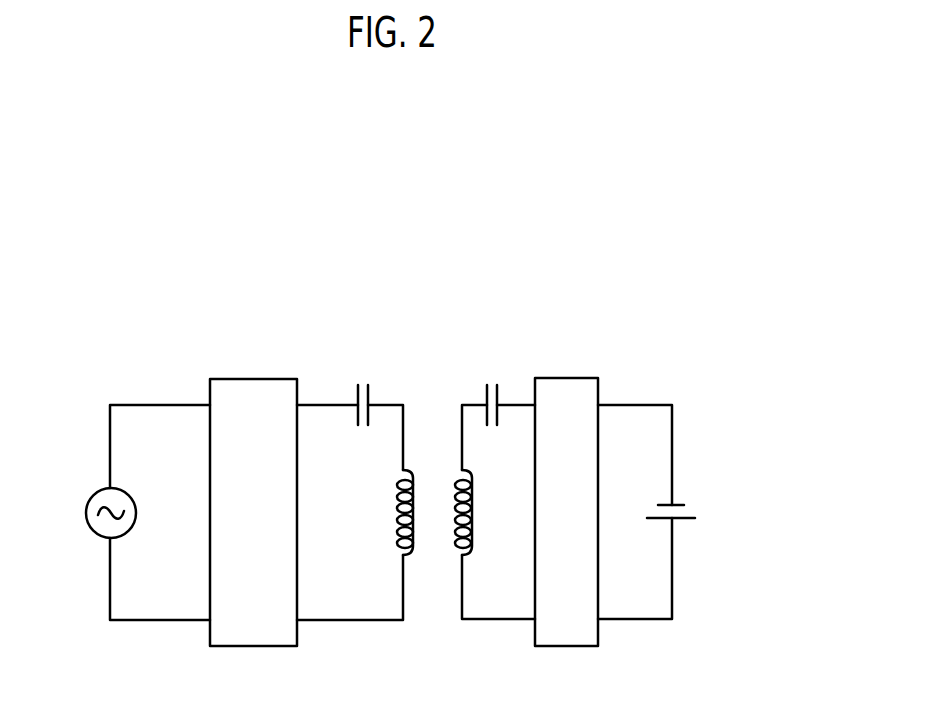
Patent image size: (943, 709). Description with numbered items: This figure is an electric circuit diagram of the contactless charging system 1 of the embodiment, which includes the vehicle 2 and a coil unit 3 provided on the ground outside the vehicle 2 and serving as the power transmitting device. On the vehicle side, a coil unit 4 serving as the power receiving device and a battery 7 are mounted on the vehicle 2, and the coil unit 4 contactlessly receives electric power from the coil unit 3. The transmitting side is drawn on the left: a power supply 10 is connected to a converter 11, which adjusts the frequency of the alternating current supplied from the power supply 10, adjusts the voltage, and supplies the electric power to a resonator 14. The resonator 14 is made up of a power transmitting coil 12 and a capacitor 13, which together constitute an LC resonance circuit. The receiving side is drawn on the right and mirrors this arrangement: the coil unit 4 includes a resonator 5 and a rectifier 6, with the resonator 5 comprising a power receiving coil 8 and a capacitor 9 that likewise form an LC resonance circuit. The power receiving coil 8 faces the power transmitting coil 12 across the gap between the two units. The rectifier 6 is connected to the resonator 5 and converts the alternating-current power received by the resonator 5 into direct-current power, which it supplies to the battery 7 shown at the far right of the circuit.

The contactless charging system 1 is at (452, 274).
The vehicle 2 is at (513, 252).
The coil unit 3 is at (385, 287).
The coil unit 4 is at (580, 285).
The resonator 5 is at (523, 320).
The rectifier 6 is at (572, 378).
The battery 7 is at (677, 503).
The power receiving coil 8 is at (457, 492).
The capacitor 9 is at (497, 393).
The power supply 10 is at (85, 514).
The converter 11 is at (255, 379).
The power transmitting coil 12 is at (412, 492).
The capacitor 13 is at (353, 393).
The resonator 14 is at (427, 320).